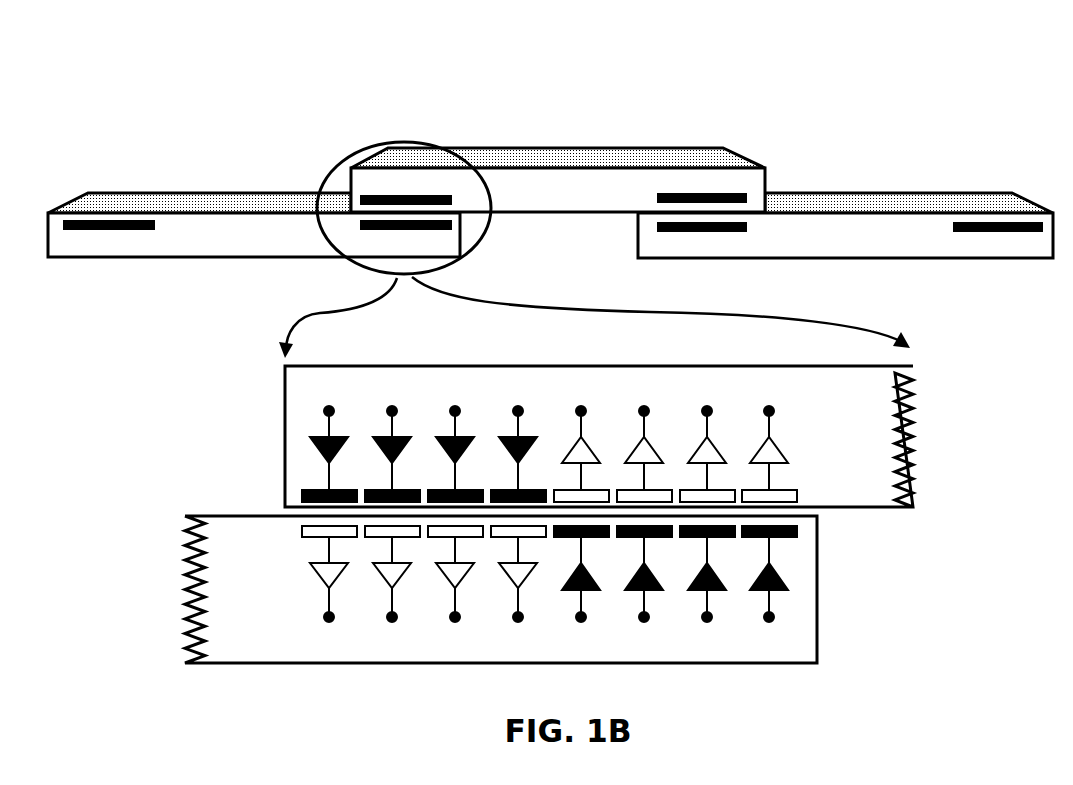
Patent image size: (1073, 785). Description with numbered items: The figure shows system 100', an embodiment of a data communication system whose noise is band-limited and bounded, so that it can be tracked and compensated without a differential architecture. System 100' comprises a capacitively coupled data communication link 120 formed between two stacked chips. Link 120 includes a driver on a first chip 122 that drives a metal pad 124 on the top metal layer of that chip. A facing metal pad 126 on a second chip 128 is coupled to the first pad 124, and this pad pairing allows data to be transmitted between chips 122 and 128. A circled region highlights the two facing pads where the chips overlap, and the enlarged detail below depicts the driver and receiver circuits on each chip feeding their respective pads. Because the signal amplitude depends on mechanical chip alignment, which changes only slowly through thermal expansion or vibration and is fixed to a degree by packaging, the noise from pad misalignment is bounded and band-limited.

The system 100' is at (550, 343).
The capacitively coupled data communication link 120 is at (413, 141).
The first chip 122 is at (558, 180).
The metal pad 124 is at (381, 195).
The facing metal pad 126 is at (390, 232).
The second chip 128 is at (254, 225).